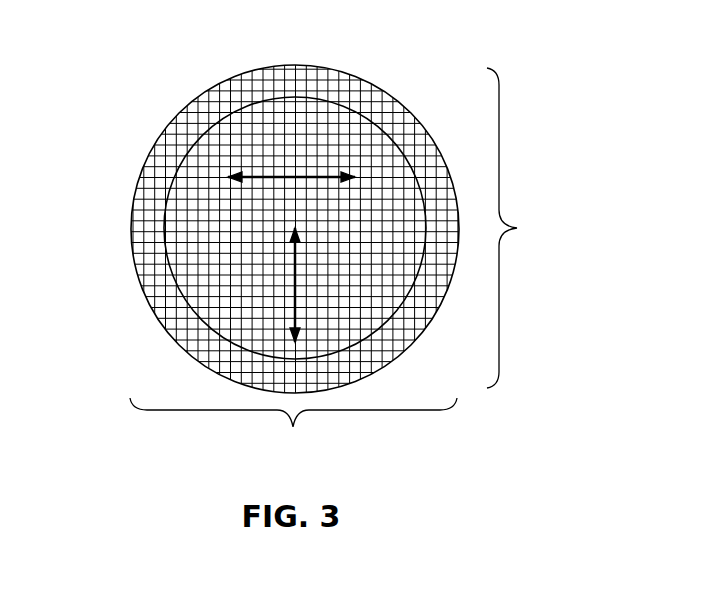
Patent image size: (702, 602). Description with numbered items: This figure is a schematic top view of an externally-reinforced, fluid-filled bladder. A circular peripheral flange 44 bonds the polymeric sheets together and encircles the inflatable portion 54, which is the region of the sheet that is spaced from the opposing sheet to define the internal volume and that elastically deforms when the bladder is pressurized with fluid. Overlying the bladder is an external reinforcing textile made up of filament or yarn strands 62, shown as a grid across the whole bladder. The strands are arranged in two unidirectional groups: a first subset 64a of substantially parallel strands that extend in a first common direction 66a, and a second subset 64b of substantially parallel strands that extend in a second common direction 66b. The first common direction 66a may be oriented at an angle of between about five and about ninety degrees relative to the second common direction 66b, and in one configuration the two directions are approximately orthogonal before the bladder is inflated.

The filament or yarn strands 62 is at (230, 96).
The peripheral flange 44 is at (382, 113).
The inflatable portion 54 is at (240, 214).
The first common direction 66a is at (292, 176).
The second common direction 66b is at (295, 278).
The first subset of unidirectional filament or yarn strands 64a is at (528, 228).
The second subset of unidirectional filament or yarn strands 64b is at (293, 431).